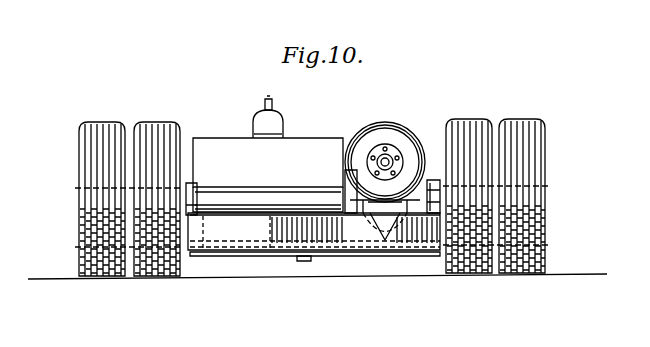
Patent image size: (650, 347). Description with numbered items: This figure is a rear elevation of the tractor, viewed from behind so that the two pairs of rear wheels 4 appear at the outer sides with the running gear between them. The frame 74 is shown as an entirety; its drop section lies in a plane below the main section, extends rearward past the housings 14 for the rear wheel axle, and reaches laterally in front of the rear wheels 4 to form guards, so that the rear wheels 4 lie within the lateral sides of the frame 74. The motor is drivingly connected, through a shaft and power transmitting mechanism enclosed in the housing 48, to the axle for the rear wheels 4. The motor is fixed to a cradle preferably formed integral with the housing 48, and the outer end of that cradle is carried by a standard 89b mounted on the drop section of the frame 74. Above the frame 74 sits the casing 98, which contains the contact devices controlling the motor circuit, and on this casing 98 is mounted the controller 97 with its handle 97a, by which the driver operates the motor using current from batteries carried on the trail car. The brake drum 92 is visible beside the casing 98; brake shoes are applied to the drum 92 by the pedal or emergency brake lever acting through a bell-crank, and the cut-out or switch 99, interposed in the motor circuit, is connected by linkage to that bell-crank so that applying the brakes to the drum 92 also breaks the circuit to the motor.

The rear wheels 4 is at (165, 280).
The housings 14 is at (208, 252).
The frame 74 is at (258, 257).
The cut-out or switch 99 is at (303, 262).
The casing 98 is at (217, 138).
The controller 97 is at (283, 124).
The handle 97a is at (265, 102).
The drum 92 is at (401, 124).
The standard 89b is at (400, 232).
The housing 48 is at (418, 214).